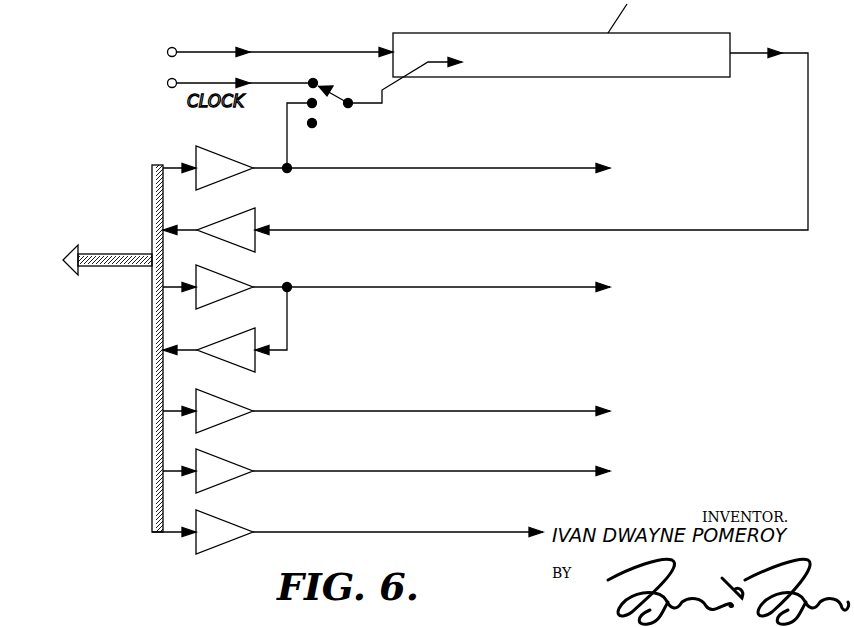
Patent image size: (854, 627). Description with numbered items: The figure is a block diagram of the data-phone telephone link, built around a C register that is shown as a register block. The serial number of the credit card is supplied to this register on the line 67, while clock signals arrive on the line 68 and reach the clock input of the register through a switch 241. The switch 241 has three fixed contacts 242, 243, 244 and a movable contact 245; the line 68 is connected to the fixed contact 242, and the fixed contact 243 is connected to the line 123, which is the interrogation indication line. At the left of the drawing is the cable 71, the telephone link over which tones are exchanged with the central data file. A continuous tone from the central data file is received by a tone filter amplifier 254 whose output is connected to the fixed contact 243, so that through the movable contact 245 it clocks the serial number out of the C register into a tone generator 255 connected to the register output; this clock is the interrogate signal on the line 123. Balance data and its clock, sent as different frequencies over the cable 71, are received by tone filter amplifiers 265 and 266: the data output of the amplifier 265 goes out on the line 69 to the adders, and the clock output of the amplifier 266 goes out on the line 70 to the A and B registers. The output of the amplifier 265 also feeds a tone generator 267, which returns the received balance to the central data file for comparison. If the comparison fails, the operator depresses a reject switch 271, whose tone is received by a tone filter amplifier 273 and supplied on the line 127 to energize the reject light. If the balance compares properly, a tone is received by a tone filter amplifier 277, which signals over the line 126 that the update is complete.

The line 67 is at (188, 52).
The line 68 is at (186, 82).
The line 69 is at (531, 286).
The line 70 is at (527, 410).
The cable 71 is at (96, 256).
The interrogation indication line 123 is at (541, 167).
The line 126 is at (438, 530).
The line 127 is at (503, 470).
The switch 241 is at (350, 115).
The fixed contact 242 is at (310, 79).
The fixed contact 243 is at (317, 107).
The fixed contact 244 is at (316, 127).
The movable contact 245 is at (390, 83).
The tone filter amplifier 254 is at (244, 144).
The tone generator 255 is at (250, 208).
The tone filter amplifier 265 is at (236, 281).
The tone filter amplifier 266 is at (240, 403).
The tone generator 267 is at (245, 368).
The reject switch 271 is at (561, 38).
The tone filter amplifier 273 is at (232, 462).
The tone filter amplifier 277 is at (230, 520).